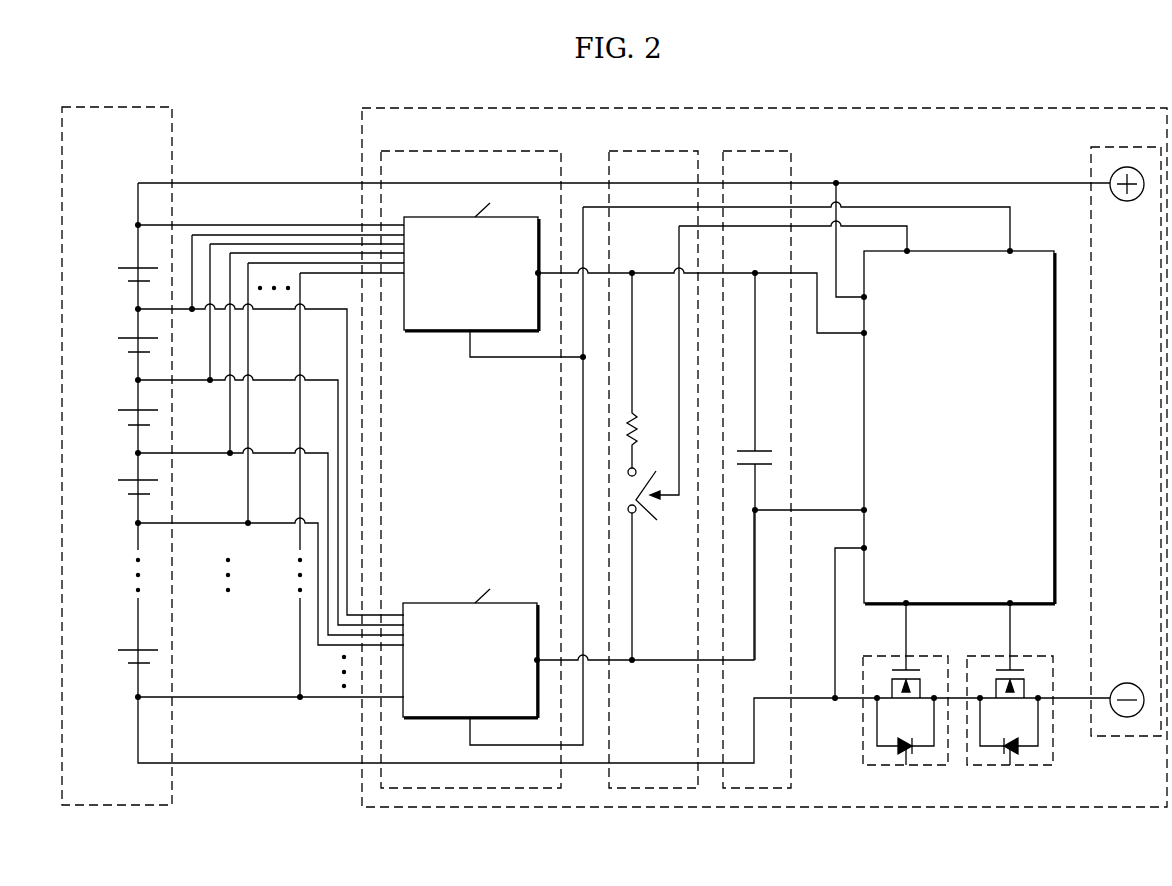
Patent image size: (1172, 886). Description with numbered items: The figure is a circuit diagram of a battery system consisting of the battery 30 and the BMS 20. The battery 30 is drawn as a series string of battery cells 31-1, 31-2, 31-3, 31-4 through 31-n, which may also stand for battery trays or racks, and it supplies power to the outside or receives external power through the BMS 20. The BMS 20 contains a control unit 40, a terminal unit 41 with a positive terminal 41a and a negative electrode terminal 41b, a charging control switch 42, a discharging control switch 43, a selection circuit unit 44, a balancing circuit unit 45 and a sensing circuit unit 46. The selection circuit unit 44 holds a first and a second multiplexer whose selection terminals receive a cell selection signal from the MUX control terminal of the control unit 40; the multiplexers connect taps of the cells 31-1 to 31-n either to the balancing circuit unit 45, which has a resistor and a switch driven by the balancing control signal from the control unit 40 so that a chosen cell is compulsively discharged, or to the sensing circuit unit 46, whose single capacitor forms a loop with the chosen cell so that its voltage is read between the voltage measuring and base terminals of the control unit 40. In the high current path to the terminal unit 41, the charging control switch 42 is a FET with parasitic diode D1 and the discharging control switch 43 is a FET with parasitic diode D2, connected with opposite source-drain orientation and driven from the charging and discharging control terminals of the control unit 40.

The BMS 20 is at (890, 107).
The battery 30 is at (139, 107).
The battery cell 31-1 is at (130, 265).
The battery cell 31-2 is at (130, 335).
The battery cell 31-3 is at (130, 407).
The battery cell 31-4 is at (130, 477).
The battery cell 31-n is at (130, 647).
The control unit 40 is at (1027, 251).
The terminal unit 41 is at (1130, 147).
The positive terminal 41a is at (1127, 201).
The negative electrode terminal 41b is at (1127, 683).
The charging control switch 42 is at (1027, 655).
The discharging control switch 43 is at (893, 655).
The selection circuit unit 44 is at (472, 151).
The balancing circuit unit 45 is at (650, 151).
The sensing circuit unit 46 is at (748, 151).
The parasitic diode D1 is at (1012, 765).
The parasitic diode D2 is at (906, 765).